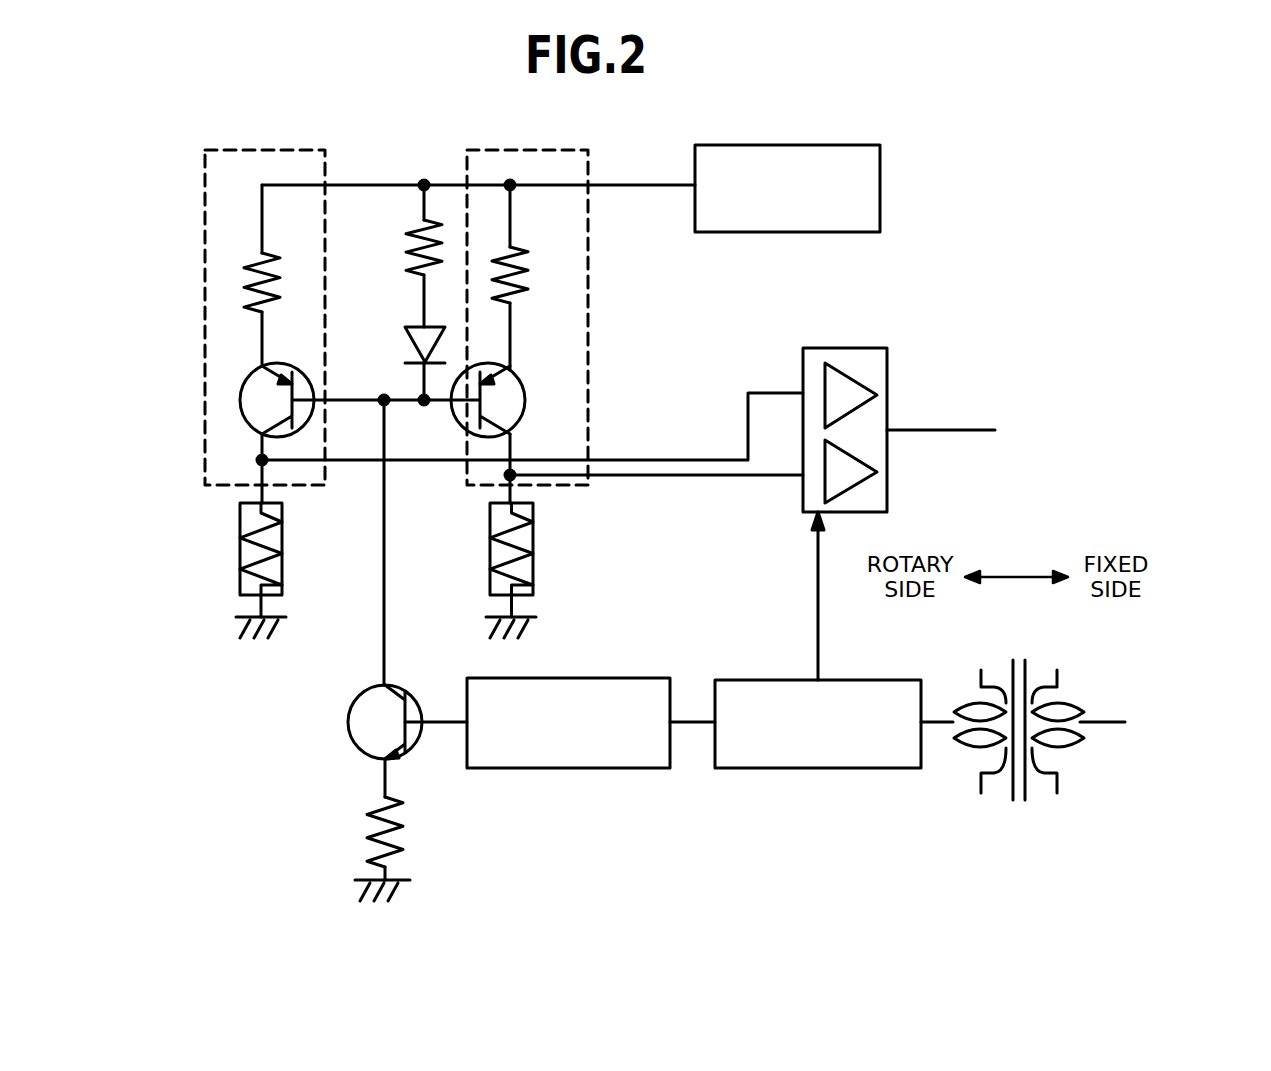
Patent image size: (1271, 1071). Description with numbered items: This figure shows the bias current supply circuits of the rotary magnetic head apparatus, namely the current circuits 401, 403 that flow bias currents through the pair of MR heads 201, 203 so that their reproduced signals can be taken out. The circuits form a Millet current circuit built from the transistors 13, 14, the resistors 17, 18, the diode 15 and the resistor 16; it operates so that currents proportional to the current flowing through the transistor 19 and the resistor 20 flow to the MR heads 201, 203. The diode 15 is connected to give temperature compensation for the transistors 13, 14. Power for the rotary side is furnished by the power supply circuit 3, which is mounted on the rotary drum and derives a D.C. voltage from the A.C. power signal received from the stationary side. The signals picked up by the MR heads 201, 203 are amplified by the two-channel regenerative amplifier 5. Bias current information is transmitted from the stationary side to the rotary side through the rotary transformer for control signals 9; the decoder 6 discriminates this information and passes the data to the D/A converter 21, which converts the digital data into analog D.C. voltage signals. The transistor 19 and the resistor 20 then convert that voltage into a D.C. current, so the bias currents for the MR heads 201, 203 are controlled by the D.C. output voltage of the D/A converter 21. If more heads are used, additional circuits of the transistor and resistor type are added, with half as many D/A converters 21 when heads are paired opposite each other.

The power supply circuit 3 is at (880, 192).
The regenerative amplifier 5 is at (877, 348).
The decoder 6 is at (763, 680).
The rotary transformer for control signals 9 is at (1048, 673).
The transistor 13 is at (253, 408).
The transistor 14 is at (507, 400).
The diode 15 is at (412, 329).
The resistor 16 is at (408, 266).
The resistor 17 is at (527, 257).
The resistor 18 is at (247, 250).
The transistor 19 is at (362, 713).
The resistor 20 is at (368, 846).
The D/A converter 21 is at (583, 678).
The MR head 201 is at (238, 560).
The MR head 203 is at (582, 578).
The current circuit 401 is at (207, 292).
The current circuit 403 is at (589, 327).